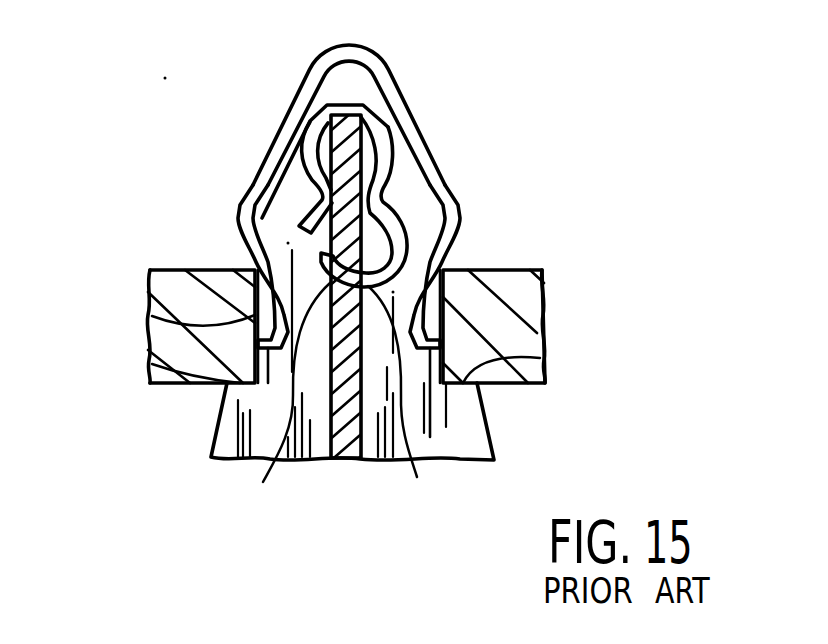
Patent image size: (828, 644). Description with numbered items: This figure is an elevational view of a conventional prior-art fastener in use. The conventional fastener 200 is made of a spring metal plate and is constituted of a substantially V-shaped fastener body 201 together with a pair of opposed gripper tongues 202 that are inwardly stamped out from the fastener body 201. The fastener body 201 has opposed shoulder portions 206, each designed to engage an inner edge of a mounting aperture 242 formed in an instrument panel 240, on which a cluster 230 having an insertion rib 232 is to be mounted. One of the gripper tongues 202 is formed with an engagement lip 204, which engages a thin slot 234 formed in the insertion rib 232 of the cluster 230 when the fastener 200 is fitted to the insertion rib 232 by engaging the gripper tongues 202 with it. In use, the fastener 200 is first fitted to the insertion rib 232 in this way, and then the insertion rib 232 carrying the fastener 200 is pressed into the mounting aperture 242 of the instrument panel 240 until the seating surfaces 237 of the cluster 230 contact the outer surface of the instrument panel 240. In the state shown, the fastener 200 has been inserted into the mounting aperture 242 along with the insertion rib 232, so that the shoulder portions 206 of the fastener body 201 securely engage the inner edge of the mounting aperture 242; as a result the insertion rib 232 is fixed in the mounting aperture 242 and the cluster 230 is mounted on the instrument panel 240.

The conventional fastener 200 is at (422, 72).
The fastener body 201 is at (419, 131).
The gripper tongues 202 is at (312, 168).
The engagement lip 204 is at (352, 382).
The shoulder portions 206 is at (242, 265).
The cluster 230 is at (332, 461).
The insertion rib 232 is at (343, 221).
The thin slot 234 is at (270, 397).
The seating surfaces 237 is at (172, 364).
The instrument panel 240 is at (518, 302).
The mounting aperture 242 is at (175, 316).